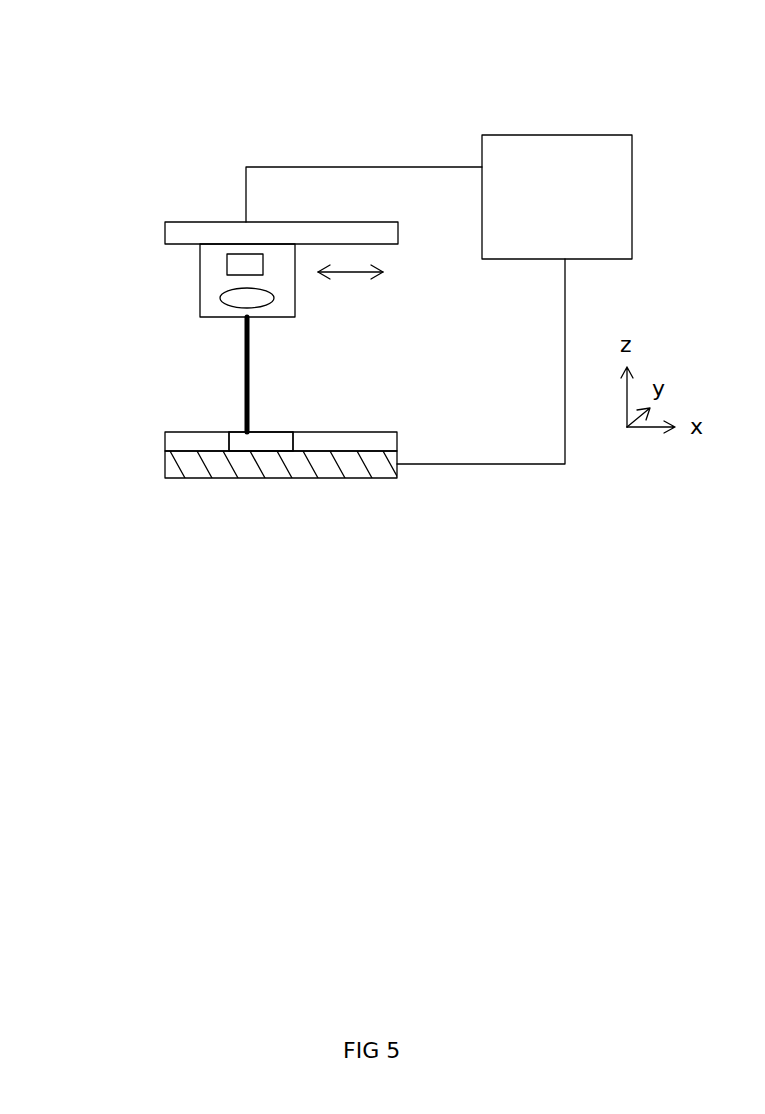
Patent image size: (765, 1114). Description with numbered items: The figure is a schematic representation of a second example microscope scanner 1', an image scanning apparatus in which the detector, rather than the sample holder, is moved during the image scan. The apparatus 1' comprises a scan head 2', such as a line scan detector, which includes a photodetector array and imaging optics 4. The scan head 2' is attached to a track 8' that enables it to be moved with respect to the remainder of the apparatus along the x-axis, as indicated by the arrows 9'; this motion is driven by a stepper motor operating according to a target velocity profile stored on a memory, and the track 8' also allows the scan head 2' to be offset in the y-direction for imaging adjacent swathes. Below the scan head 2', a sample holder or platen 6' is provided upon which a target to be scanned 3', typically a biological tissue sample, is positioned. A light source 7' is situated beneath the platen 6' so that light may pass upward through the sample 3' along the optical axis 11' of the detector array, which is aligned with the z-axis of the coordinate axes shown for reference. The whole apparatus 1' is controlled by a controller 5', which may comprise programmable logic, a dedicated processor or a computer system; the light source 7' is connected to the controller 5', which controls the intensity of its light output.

The microscope scanner 1' is at (375, 245).
The scan head 2' is at (189, 280).
The target to be scanned 3' is at (312, 493).
The imaging optics 4 is at (233, 297).
The controller 5' is at (557, 197).
The sample holder or platen 6' is at (294, 404).
The light source 7' is at (220, 502).
The track 8' is at (289, 213).
The arrows 9' is at (350, 284).
The optical axis 11' is at (174, 374).